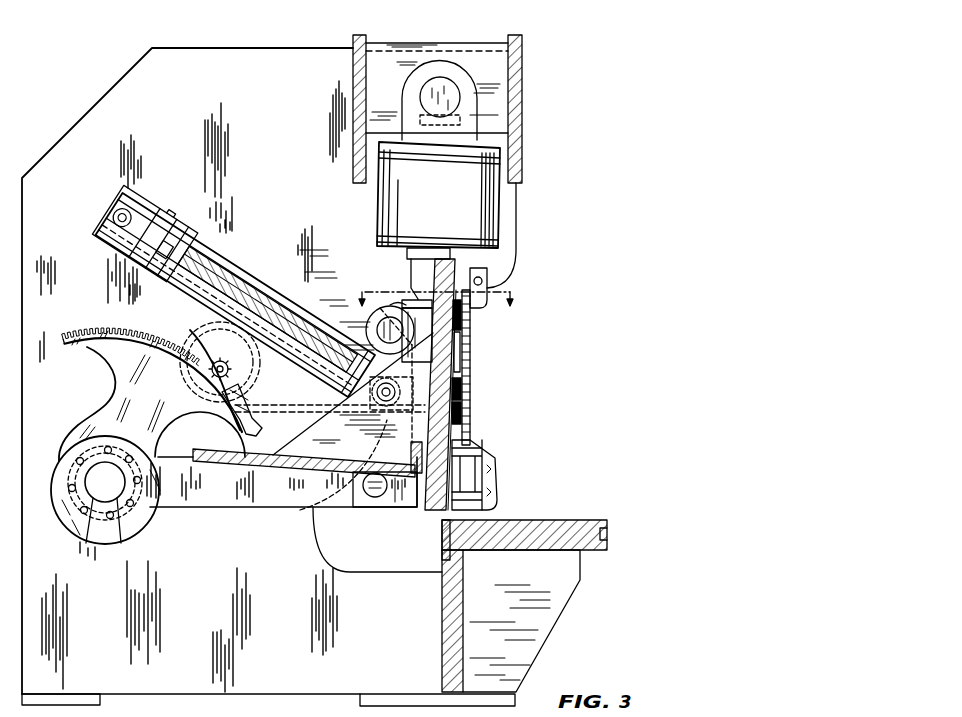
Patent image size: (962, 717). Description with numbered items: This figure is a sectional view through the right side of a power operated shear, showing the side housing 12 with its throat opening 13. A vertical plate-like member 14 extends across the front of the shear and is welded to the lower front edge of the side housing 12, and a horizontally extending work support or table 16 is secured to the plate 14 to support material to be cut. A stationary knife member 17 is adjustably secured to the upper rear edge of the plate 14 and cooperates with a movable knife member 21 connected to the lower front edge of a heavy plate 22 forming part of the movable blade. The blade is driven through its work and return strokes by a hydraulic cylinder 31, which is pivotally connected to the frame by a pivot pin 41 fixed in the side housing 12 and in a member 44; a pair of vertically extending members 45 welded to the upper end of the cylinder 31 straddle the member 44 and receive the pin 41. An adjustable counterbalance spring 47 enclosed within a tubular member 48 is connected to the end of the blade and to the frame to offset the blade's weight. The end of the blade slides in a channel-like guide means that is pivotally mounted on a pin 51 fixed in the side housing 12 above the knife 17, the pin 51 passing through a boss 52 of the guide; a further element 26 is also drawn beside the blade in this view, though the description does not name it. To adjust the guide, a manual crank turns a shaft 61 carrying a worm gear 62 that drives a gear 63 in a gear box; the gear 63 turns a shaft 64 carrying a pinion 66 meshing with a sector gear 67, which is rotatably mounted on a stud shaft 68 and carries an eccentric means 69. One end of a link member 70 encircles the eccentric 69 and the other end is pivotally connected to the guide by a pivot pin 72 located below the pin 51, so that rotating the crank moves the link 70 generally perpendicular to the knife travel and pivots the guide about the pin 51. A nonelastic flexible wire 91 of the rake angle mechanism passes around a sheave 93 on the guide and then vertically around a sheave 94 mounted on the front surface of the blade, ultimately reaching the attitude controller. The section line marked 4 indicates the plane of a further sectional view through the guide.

The side housing 12 is at (62, 140).
The opening 13 is at (336, 570).
The vertical plate-like member 14 is at (464, 640).
The work support or table 16 is at (562, 521).
The stationary knife member 17 is at (442, 540).
The movable knife member 21 is at (437, 516).
The heavy plate 22 is at (412, 268).
The rack bar 26 is at (470, 344).
The hydraulic cylinder 31 is at (376, 218).
The pivot pin 41 is at (458, 97).
The member 44 is at (410, 48).
The vertically extending members 45 is at (443, 62).
The counterbalance spring 47 is at (226, 265).
The tubular member 48 is at (247, 283).
The pin 51 is at (378, 333).
The boss 52 is at (366, 319).
The shaft 61 is at (334, 381).
The worm gear 62 is at (234, 428).
The gear 63 is at (222, 330).
The shaft 64 is at (230, 369).
The pinion 66 is at (196, 346).
The sector gear 67 is at (95, 334).
The stud shaft 68 is at (90, 535).
The eccentric means 69 is at (104, 530).
The link member 70 is at (228, 512).
The pivot pin 72 is at (366, 507).
The flexible wire 91 is at (462, 386).
The sheave 93 is at (462, 403).
The sheave 94 is at (464, 322).
The section line 4- 4 is at (434, 288).